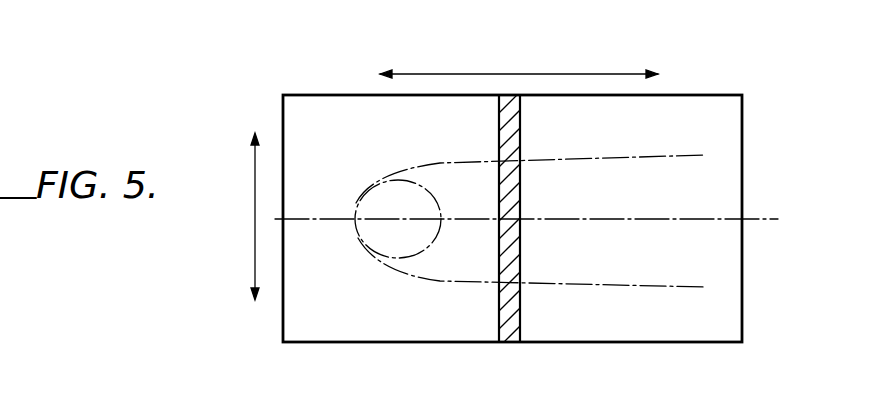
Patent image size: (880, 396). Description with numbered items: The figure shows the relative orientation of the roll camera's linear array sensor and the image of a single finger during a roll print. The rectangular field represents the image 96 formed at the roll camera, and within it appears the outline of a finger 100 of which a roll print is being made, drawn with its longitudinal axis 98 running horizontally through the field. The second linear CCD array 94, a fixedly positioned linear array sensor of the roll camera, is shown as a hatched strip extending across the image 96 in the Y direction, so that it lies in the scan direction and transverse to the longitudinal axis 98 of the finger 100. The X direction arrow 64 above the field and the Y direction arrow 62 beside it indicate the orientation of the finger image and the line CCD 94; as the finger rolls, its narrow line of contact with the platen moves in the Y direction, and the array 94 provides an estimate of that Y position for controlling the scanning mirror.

The Y direction arrow 62 is at (252, 264).
The X direction arrow 64 is at (575, 72).
The second linear CCD array 94 is at (520, 138).
The image 96 is at (742, 142).
The longitudinal axis 98 is at (760, 219).
The finger 100 is at (447, 160).